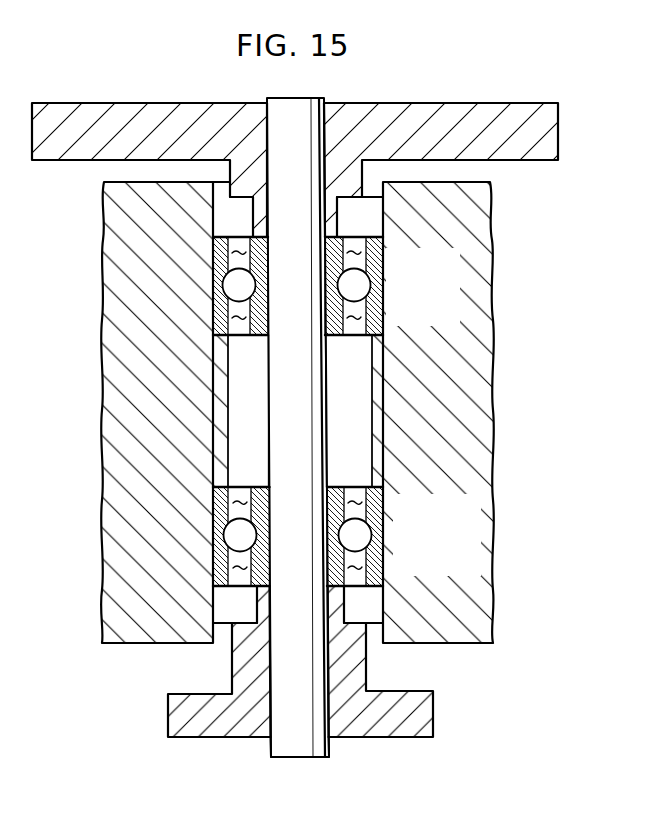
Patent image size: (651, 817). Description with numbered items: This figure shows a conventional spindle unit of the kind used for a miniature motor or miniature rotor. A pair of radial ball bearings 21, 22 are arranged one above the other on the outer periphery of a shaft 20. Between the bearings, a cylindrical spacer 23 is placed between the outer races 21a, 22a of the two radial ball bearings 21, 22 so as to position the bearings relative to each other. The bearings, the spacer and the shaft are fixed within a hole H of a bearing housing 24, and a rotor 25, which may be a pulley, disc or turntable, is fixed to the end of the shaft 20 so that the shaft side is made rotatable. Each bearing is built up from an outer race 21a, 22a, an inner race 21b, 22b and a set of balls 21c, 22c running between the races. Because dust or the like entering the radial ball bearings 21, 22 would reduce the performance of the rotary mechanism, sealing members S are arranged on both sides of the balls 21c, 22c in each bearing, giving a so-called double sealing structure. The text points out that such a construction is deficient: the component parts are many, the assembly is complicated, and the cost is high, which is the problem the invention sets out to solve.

The rotor 25 is at (453, 110).
The bearing housing 24 is at (489, 398).
The shaft 20 is at (270, 384).
The cylindrical spacer 23 is at (370, 400).
The radial ball bearing 21 is at (336, 286).
The outer race 21a is at (383, 318).
The inner race 21b is at (380, 266).
The balls 21c is at (380, 290).
The radial ball bearing 22 is at (343, 536).
The outer race 22a is at (384, 566).
The inner race 22b is at (384, 514).
The balls 22c is at (384, 540).
The sealing members S is at (354, 244).
The hole H is at (376, 636).